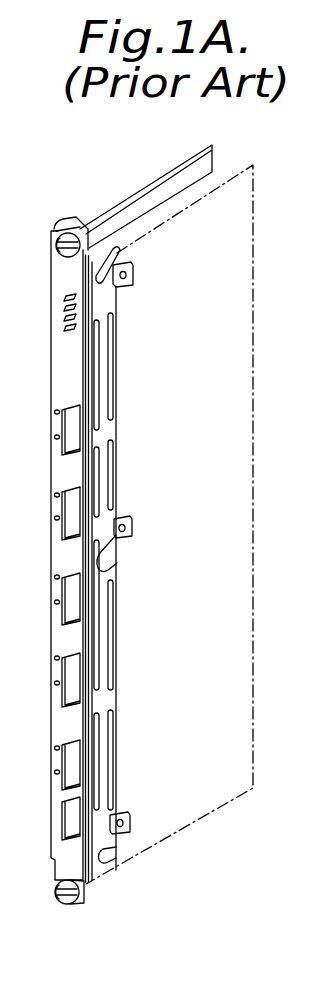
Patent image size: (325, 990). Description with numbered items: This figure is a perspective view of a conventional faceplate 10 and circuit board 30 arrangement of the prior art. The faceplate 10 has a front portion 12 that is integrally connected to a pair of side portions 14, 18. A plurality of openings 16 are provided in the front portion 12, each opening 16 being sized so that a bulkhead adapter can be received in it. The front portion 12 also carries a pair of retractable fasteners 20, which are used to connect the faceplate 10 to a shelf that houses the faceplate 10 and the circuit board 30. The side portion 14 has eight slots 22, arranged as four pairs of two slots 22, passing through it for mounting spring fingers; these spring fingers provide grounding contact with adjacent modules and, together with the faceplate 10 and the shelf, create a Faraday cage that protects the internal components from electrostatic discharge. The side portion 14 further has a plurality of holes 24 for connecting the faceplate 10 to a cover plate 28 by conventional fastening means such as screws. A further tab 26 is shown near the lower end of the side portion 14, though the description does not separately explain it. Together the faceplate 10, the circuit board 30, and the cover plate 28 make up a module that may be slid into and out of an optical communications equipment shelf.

The faceplate 10 is at (50, 287).
The front portion 12 is at (60, 358).
The side portion 14 is at (105, 306).
The openings 16 is at (72, 592).
The side portion 18 is at (77, 226).
The retractable fasteners 20 is at (56, 231).
The slots 22 is at (96, 464).
The holes 24 is at (127, 272).
The bottom mounting tab 26 is at (104, 852).
The cover plate 28 is at (254, 200).
The circuit board 30 is at (161, 196).